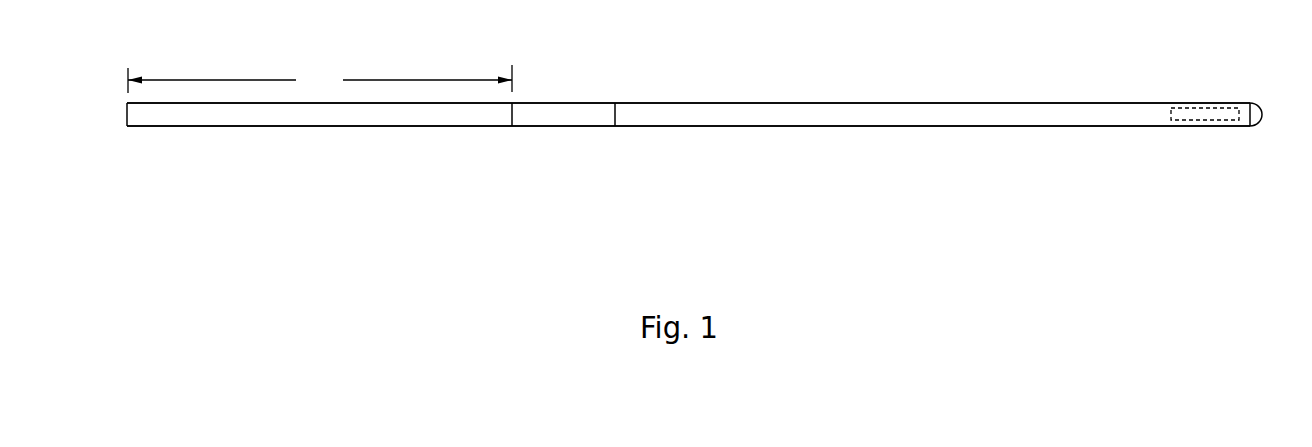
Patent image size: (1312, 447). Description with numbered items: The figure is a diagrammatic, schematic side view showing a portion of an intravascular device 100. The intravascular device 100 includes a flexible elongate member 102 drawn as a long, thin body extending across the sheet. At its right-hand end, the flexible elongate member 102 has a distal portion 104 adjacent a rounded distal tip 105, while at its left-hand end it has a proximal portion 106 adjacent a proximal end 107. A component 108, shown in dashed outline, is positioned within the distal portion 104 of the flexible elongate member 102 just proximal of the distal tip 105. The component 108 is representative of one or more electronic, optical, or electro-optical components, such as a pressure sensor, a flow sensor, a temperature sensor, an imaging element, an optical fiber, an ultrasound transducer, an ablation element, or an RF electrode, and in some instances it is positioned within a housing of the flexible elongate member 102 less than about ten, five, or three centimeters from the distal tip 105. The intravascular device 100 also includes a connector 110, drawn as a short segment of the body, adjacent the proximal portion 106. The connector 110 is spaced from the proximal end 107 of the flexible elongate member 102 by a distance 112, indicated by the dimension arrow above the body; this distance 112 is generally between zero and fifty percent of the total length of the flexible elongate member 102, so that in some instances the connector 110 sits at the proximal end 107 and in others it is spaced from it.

The intravascular device 100 is at (857, 73).
The flexible elongate member 102 is at (963, 127).
The distal portion 104 is at (1207, 146).
The distal tip 105 is at (1262, 112).
The proximal portion 106 is at (208, 139).
The proximal end 107 is at (127, 125).
The component 108 is at (1200, 110).
The connector 110 is at (564, 101).
The distance 112 is at (320, 79).